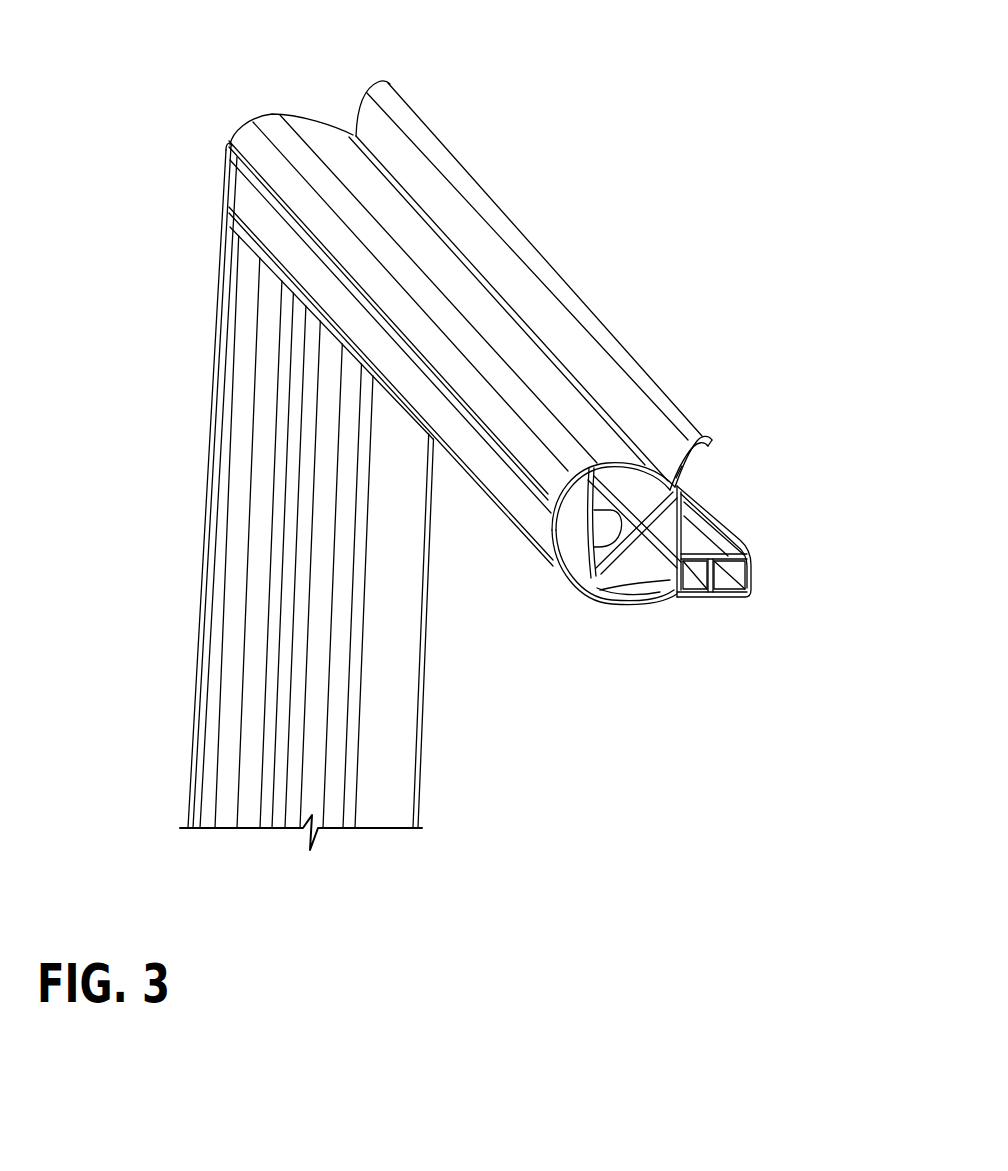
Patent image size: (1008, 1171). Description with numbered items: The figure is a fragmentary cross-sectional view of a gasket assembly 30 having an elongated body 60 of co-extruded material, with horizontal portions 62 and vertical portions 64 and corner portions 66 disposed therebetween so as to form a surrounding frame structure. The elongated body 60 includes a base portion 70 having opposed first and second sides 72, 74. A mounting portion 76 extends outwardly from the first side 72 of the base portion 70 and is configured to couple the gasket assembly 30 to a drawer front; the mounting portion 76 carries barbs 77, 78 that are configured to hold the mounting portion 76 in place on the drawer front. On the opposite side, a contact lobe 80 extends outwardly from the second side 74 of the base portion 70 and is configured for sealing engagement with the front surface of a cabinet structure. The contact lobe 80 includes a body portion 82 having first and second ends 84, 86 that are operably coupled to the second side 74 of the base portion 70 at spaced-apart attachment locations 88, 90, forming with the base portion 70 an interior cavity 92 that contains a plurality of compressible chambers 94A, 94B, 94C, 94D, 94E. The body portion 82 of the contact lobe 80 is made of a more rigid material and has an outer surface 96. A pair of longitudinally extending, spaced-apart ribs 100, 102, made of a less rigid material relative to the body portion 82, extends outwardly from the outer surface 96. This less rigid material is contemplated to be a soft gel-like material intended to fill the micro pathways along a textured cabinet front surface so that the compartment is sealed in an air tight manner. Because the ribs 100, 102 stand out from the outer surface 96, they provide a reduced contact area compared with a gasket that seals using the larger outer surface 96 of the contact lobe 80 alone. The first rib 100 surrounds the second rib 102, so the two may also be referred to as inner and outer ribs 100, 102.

The gasket assembly 30 is at (553, 200).
The elongated body 60 is at (507, 153).
The horizontal portions 62 is at (590, 283).
The vertical portions 64 is at (193, 413).
The corner portions 66 is at (323, 98).
The base portion 70 is at (698, 491).
The first side 72 is at (700, 510).
The second side 74 is at (635, 597).
The mounting portion 76 is at (747, 607).
The barb 77 is at (750, 587).
The barb 78 is at (743, 552).
The contact lobe 80 is at (533, 567).
The body portion 82 is at (663, 490).
The first end 84 is at (682, 487).
The second end 86 is at (660, 593).
The attachment location 88 is at (703, 483).
The attachment location 90 is at (670, 590).
The interior cavity 92 is at (568, 587).
The compressible chamber 94A is at (571, 502).
The compressible chamber 94B is at (659, 529).
The compressible chamber 94C is at (631, 492).
The compressible chamber 94D is at (607, 569).
The compressible chamber 94E is at (727, 531).
The outer surface 96 is at (580, 553).
The first rib 100 is at (512, 460).
The second rib 102 is at (528, 537).